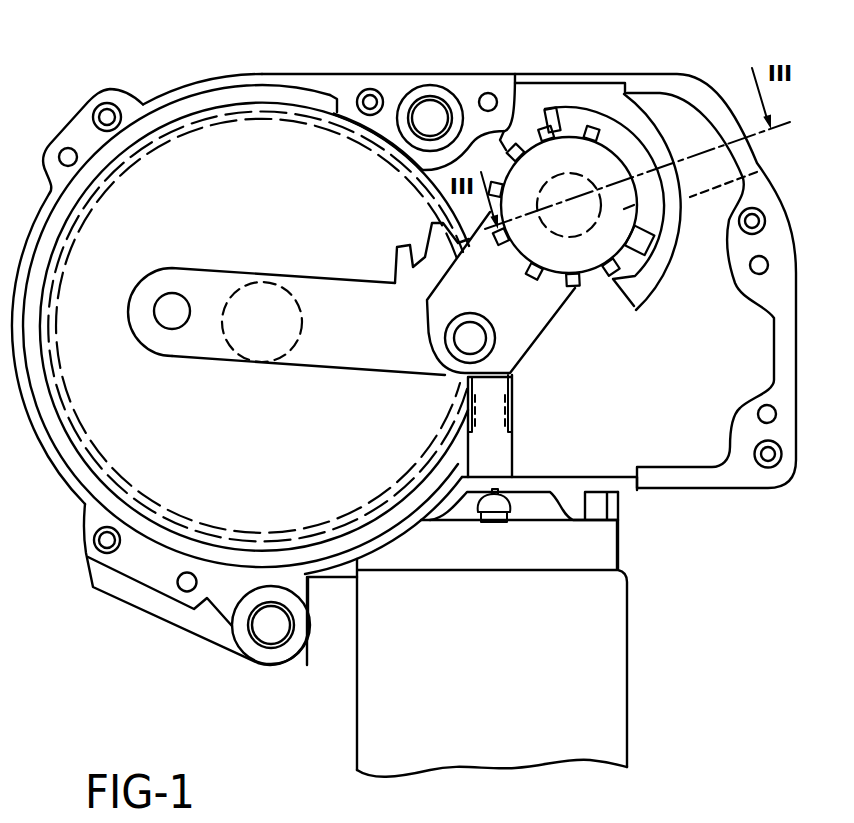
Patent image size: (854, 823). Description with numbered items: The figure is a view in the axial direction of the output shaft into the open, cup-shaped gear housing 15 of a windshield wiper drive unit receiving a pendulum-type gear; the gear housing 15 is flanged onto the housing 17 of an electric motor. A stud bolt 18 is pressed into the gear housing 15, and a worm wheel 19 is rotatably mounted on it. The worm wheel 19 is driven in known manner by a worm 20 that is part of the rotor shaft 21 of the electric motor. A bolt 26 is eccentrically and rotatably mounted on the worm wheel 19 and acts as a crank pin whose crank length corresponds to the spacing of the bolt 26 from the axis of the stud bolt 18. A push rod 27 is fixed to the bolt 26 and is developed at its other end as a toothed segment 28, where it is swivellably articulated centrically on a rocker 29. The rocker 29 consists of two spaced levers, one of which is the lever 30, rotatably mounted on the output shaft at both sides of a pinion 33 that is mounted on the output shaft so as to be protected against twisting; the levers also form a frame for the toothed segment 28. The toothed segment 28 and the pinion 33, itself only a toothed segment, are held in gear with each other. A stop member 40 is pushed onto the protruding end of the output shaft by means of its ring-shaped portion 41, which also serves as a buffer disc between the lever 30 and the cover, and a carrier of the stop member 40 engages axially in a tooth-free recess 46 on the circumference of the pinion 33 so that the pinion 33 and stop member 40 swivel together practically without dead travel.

The gear housing 15 is at (780, 290).
The housing of the electric motor 17 is at (372, 732).
The stud bolt 18 is at (258, 362).
The worm wheel 19 is at (118, 472).
The worm 20 is at (513, 408).
The rotor shaft 21 is at (508, 455).
The bolt 26 is at (163, 298).
The push rod 27 is at (218, 272).
The toothed segment 28 is at (395, 246).
The rocker 29 is at (575, 331).
The lever 30 is at (530, 340).
The pinion 33 is at (505, 130).
The stop member 40 is at (568, 157).
The ring-shaped portion 41 is at (600, 248).
The tooth-free recess 46 is at (762, 172).